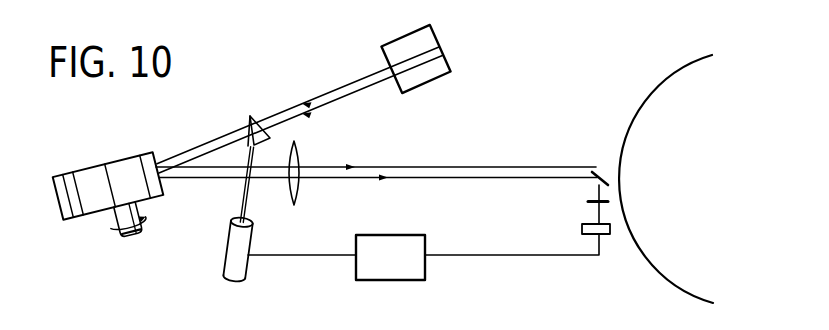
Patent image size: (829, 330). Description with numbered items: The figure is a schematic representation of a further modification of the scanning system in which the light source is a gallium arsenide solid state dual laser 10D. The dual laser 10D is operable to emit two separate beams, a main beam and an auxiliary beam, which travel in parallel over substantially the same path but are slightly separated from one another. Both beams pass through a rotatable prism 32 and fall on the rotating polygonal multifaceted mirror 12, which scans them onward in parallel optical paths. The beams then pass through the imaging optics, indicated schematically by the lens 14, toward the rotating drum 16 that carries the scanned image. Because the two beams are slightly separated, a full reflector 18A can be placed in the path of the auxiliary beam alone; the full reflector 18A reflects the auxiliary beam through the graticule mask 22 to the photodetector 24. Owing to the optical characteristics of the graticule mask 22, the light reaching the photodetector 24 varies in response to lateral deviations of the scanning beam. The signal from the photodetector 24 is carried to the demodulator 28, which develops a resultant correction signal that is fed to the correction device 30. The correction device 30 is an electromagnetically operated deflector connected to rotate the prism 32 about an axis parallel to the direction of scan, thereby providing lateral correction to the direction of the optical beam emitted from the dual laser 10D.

The dual laser 10D is at (424, 42).
The rotating polygonal multifaceted mirror 12 is at (92, 168).
The lens 14 is at (300, 155).
The rotating drum 16 is at (673, 287).
The full reflector 18A is at (608, 183).
The graticule mask 22 is at (588, 201).
The photodetector 24 is at (608, 237).
The demodulator 28 is at (412, 235).
The correction device 30 is at (228, 257).
The prism 32 is at (251, 115).